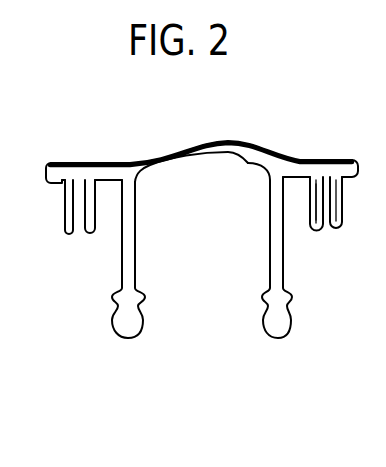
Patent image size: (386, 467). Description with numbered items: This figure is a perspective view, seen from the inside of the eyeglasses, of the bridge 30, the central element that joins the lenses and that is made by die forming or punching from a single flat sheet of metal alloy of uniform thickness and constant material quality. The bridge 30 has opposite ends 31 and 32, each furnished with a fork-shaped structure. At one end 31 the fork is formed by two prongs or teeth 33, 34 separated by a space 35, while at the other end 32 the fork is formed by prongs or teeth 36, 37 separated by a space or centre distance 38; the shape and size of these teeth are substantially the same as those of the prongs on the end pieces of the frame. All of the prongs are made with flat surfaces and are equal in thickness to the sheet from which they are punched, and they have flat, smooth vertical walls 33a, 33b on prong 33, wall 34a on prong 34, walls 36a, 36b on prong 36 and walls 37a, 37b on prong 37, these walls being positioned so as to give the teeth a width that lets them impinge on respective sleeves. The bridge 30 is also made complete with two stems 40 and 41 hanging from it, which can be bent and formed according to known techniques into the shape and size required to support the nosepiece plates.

The bridge 30 is at (227, 143).
The end of the bridge 31 is at (55, 167).
The end of the bridge 32 is at (345, 157).
The prong or tooth 33 is at (62, 211).
The vertical wall of prong 33a is at (63, 193).
The vertical wall of prong 33b is at (77, 190).
The prong or tooth 34 is at (80, 223).
The vertical wall of prong 34a is at (92, 198).
The space 35 is at (77, 218).
The prong or tooth 36 is at (331, 238).
The vertical wall of prong 36a is at (318, 193).
The vertical wall of prong 36b is at (343, 200).
The prong or tooth 37 is at (308, 228).
The vertical wall of prong 37a is at (308, 193).
The vertical wall of prong 37b is at (316, 221).
The space or centre distance 38 is at (321, 228).
The stem 40 is at (130, 339).
The stem 41 is at (270, 339).